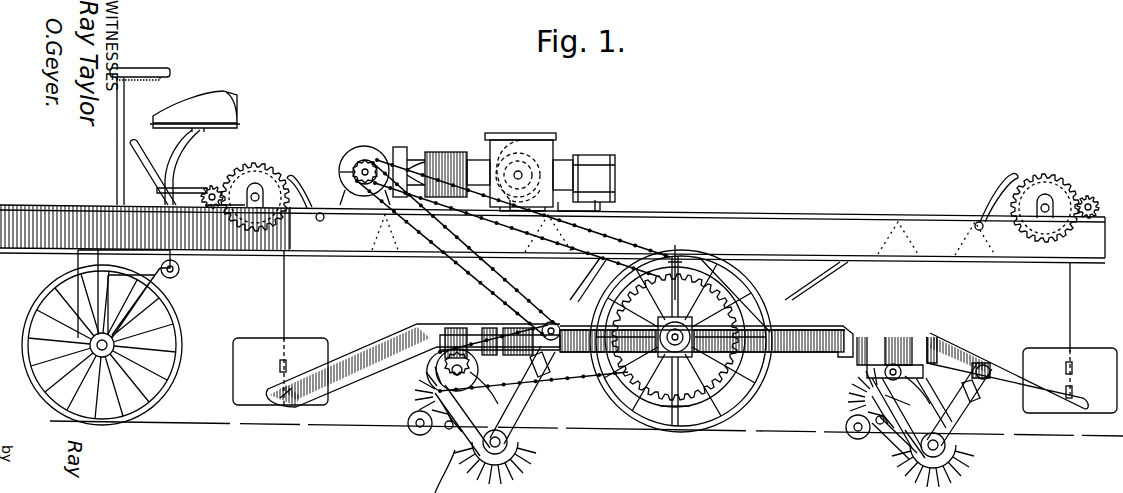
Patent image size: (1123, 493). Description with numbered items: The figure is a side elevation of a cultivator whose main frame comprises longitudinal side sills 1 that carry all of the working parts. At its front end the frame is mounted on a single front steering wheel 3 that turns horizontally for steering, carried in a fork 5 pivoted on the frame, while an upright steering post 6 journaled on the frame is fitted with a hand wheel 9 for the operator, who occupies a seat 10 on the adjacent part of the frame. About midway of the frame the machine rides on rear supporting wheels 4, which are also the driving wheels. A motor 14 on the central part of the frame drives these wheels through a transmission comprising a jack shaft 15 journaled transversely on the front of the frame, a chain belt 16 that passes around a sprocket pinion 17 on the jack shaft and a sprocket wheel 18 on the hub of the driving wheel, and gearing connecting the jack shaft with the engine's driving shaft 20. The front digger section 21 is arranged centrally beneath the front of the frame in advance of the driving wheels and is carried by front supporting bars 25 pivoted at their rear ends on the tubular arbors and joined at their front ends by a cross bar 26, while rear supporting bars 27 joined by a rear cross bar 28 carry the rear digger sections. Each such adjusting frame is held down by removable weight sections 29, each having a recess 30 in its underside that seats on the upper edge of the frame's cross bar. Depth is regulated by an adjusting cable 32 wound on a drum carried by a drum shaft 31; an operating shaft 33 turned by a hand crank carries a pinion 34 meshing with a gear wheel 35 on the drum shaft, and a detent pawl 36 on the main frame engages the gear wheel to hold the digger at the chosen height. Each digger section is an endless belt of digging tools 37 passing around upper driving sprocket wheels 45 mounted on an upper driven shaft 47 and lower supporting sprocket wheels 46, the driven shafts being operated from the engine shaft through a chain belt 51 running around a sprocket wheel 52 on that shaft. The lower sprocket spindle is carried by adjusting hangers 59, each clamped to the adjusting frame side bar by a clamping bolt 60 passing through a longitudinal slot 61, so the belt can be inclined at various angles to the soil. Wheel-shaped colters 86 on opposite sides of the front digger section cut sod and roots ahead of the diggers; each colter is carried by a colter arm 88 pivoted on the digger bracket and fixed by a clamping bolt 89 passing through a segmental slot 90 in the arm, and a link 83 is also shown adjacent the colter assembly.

The side sill 1 is at (868, 231).
The front steering wheel 3 is at (30, 370).
The rear supporting wheel 4 is at (748, 292).
The fork 5 is at (128, 294).
The steering post 6 is at (117, 135).
The hand wheel 9 is at (140, 64).
The seat 10 is at (195, 148).
The motor 14 is at (540, 136).
The jack shaft 15 is at (352, 172).
The chain belt 16 is at (513, 248).
The sprocket pinion 17 is at (365, 158).
The sprocket wheel 18 is at (678, 406).
The driving shaft 20 is at (522, 173).
The front digger section 21 is at (451, 471).
The front supporting bar 25 is at (368, 352).
The cross bar 26 is at (292, 398).
The rear supporting bar 27 is at (812, 326).
The rear cross bar 28 is at (1074, 393).
The weight section 29 is at (240, 340).
The recess 30 is at (279, 368).
The drum shaft 31 is at (254, 203).
The adjusting cable 32 is at (284, 289).
The operating shaft 33 is at (211, 201).
The pinion 34 is at (212, 188).
The gear wheel 35 is at (255, 172).
The detent pawl 36 is at (320, 221).
The digging tool 37 is at (512, 460).
The upper driving sprocket wheel 45 is at (868, 384).
The lower supporting sprocket wheel 46 is at (930, 453).
The upper driven shaft 47 is at (435, 370).
The chain belt 51 is at (709, 295).
The sprocket wheel 52 is at (560, 380).
The adjusting hanger 59 is at (518, 400).
The clamping bolt 60 is at (552, 322).
The longitudinal slot 61 is at (980, 400).
The link arm 83 is at (460, 438).
The colter 86 is at (412, 430).
The colter arm 88 is at (447, 428).
The clamping bolt 89 is at (432, 409).
The segmental slot 90 is at (892, 422).